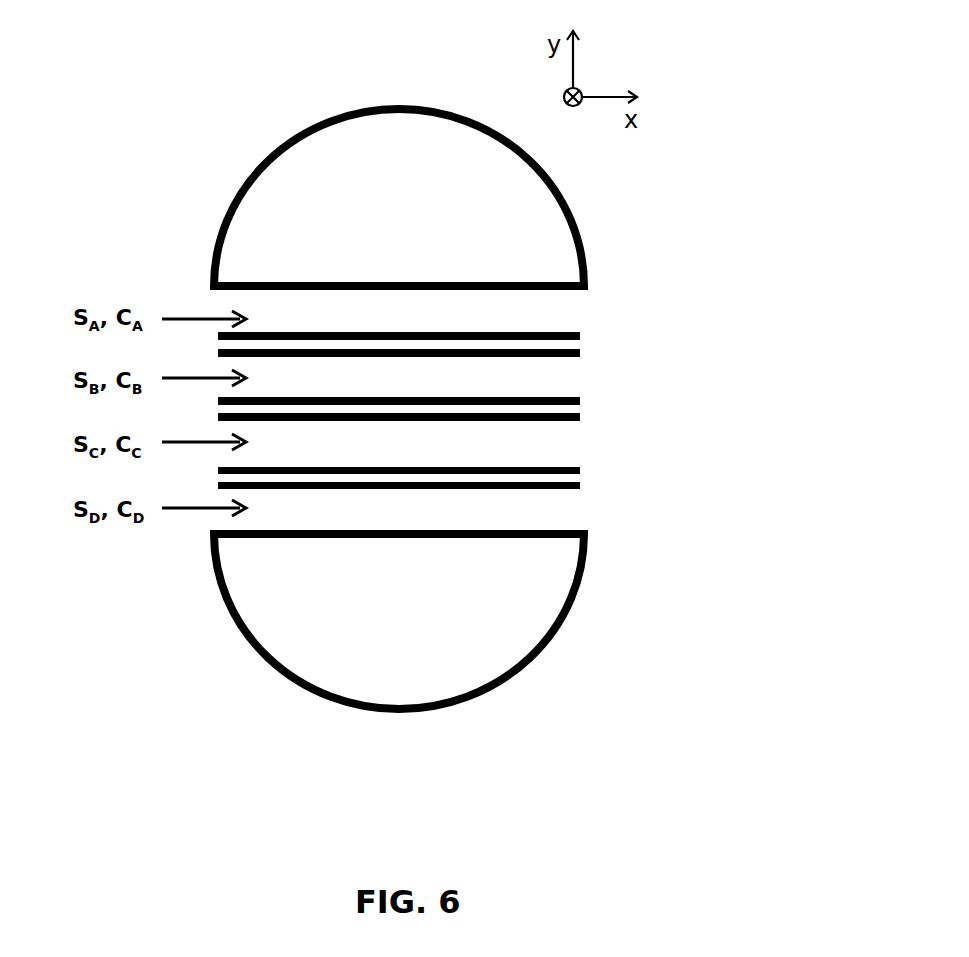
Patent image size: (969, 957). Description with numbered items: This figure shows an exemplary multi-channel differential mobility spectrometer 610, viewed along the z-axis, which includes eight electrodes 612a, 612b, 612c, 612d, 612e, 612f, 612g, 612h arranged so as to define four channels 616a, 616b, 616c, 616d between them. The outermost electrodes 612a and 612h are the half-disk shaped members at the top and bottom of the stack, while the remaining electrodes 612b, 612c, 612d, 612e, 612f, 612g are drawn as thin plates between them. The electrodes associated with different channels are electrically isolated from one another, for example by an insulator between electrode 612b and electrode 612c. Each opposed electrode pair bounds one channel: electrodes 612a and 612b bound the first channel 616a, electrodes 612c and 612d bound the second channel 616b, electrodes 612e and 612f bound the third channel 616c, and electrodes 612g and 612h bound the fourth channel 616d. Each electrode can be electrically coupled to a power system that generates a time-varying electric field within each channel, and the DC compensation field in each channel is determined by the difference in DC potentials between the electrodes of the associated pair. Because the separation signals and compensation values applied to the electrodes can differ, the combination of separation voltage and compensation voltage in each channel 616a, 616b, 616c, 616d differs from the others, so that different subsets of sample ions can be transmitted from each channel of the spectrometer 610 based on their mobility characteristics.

The multi-channel differential mobility spectrometer 610 is at (262, 114).
The electrode 612a is at (405, 170).
The electrode 612b is at (315, 330).
The electrode 612c is at (567, 353).
The electrode 612d is at (565, 402).
The electrode 612e is at (557, 418).
The electrode 612f is at (580, 467).
The electrode 612g is at (555, 485).
The electrode 612h is at (515, 617).
The channel 616a is at (399, 311).
The channel 616b is at (399, 377).
The channel 616c is at (399, 444).
The channel 616d is at (399, 509).